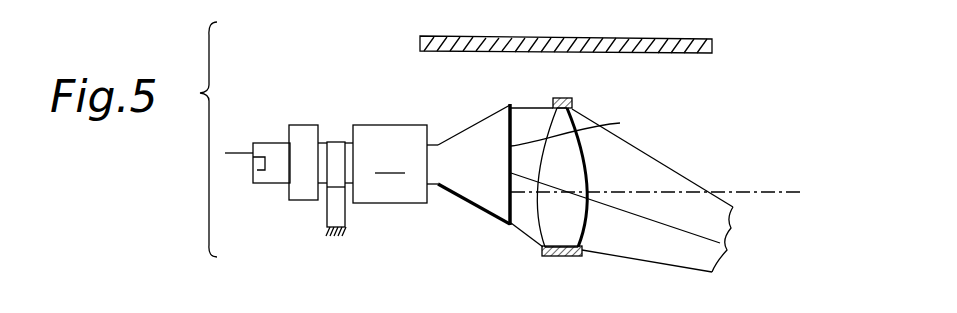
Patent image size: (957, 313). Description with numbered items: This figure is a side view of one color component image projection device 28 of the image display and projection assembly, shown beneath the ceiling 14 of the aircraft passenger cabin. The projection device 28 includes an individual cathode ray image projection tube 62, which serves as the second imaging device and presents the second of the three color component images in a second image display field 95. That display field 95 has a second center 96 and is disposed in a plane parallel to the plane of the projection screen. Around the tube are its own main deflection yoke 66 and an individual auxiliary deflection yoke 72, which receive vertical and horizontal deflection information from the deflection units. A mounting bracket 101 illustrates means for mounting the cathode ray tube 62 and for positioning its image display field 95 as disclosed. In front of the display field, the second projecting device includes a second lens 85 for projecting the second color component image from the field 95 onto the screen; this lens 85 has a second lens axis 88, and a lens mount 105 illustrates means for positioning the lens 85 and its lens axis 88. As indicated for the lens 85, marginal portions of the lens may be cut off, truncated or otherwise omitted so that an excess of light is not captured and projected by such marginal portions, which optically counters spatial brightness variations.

The ceiling 14 is at (663, 54).
The color component image projection device 28 is at (454, 157).
The cathode ray image projection tube 62 is at (494, 186).
The main deflection yoke 66 is at (390, 164).
The auxiliary deflection yoke 72 is at (305, 130).
The second lens 85 is at (582, 230).
The second lens axis 88 is at (747, 190).
The second image display field 95 is at (531, 86).
The second center 96 is at (583, 127).
The mounting bracket 101 is at (331, 211).
The lens mount 105 is at (572, 100).